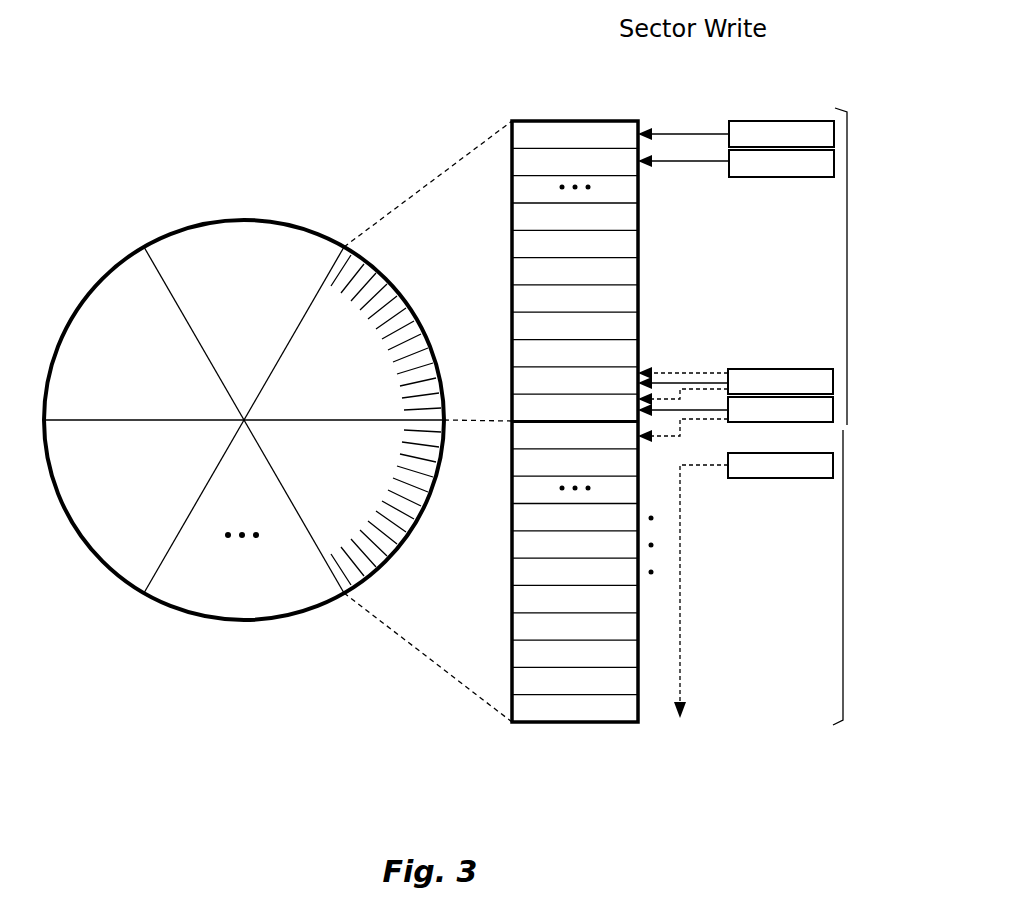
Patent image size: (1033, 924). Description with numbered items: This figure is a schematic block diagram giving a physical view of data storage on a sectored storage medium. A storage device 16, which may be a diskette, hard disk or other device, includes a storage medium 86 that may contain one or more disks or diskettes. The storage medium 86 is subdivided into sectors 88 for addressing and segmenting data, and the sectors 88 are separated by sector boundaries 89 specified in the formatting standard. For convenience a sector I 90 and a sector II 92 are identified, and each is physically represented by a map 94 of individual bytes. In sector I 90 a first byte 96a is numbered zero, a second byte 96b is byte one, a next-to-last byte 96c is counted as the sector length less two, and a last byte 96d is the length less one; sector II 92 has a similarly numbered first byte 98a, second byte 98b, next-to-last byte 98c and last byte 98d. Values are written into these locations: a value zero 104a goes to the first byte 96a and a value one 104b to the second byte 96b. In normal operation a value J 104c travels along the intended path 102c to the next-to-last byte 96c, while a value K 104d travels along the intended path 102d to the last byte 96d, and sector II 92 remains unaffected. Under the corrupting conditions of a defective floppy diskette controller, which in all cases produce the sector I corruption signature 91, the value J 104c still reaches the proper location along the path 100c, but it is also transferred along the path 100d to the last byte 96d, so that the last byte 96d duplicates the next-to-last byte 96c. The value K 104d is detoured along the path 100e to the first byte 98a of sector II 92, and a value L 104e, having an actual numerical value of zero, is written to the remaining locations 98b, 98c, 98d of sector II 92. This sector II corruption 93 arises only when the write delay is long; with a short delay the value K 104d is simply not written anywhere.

The storage device 16 is at (115, 200).
The storage medium 86 is at (245, 208).
The sectors 88 is at (128, 565).
The sector boundaries 89 is at (207, 422).
The sector I 90 is at (496, 238).
The short delay corruption signature 91 is at (847, 290).
The sector II 92 is at (405, 545).
The long delay corruption 93 is at (843, 680).
The map 94 is at (591, 752).
The first byte 96a is at (586, 121).
The second byte 96b is at (512, 162).
The next-to-last byte 96c is at (512, 380).
The last byte 96d is at (512, 407).
The first byte 98a is at (512, 434).
The second byte 98b is at (512, 462).
The next-to-last byte 98c is at (512, 680).
The last byte 98d is at (527, 722).
The path 100c is at (650, 373).
The path 100d is at (680, 395).
The path 100e is at (682, 428).
The path 102c is at (665, 383).
The path 102d is at (688, 410).
The value zero 104a is at (778, 121).
The value one 104b is at (834, 165).
The value J 104c is at (833, 375).
The value K 104d is at (833, 413).
The value L 104e is at (833, 462).